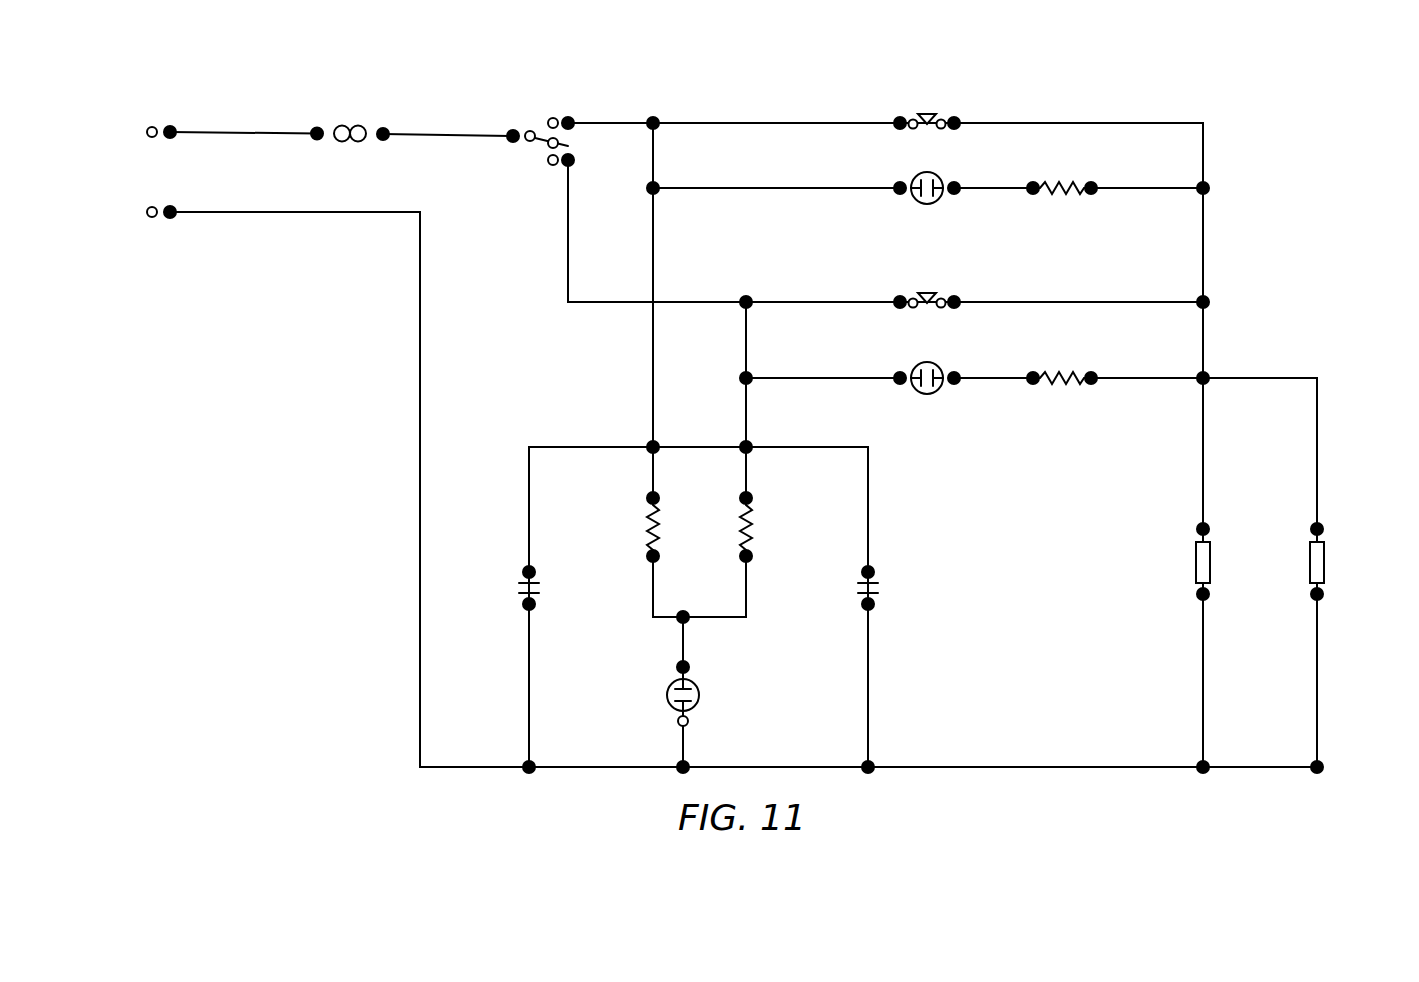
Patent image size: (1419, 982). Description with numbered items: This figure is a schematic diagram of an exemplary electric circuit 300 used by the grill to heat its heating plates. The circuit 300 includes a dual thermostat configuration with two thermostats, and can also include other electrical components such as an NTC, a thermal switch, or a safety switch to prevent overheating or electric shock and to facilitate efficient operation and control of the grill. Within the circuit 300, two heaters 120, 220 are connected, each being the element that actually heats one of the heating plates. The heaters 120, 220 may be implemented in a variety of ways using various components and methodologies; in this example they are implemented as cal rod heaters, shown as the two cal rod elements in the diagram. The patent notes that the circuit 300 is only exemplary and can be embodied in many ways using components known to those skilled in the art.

The electric circuit 300 is at (703, 418).
The heater 120 is at (1196, 563).
The heater 220 is at (1311, 563).